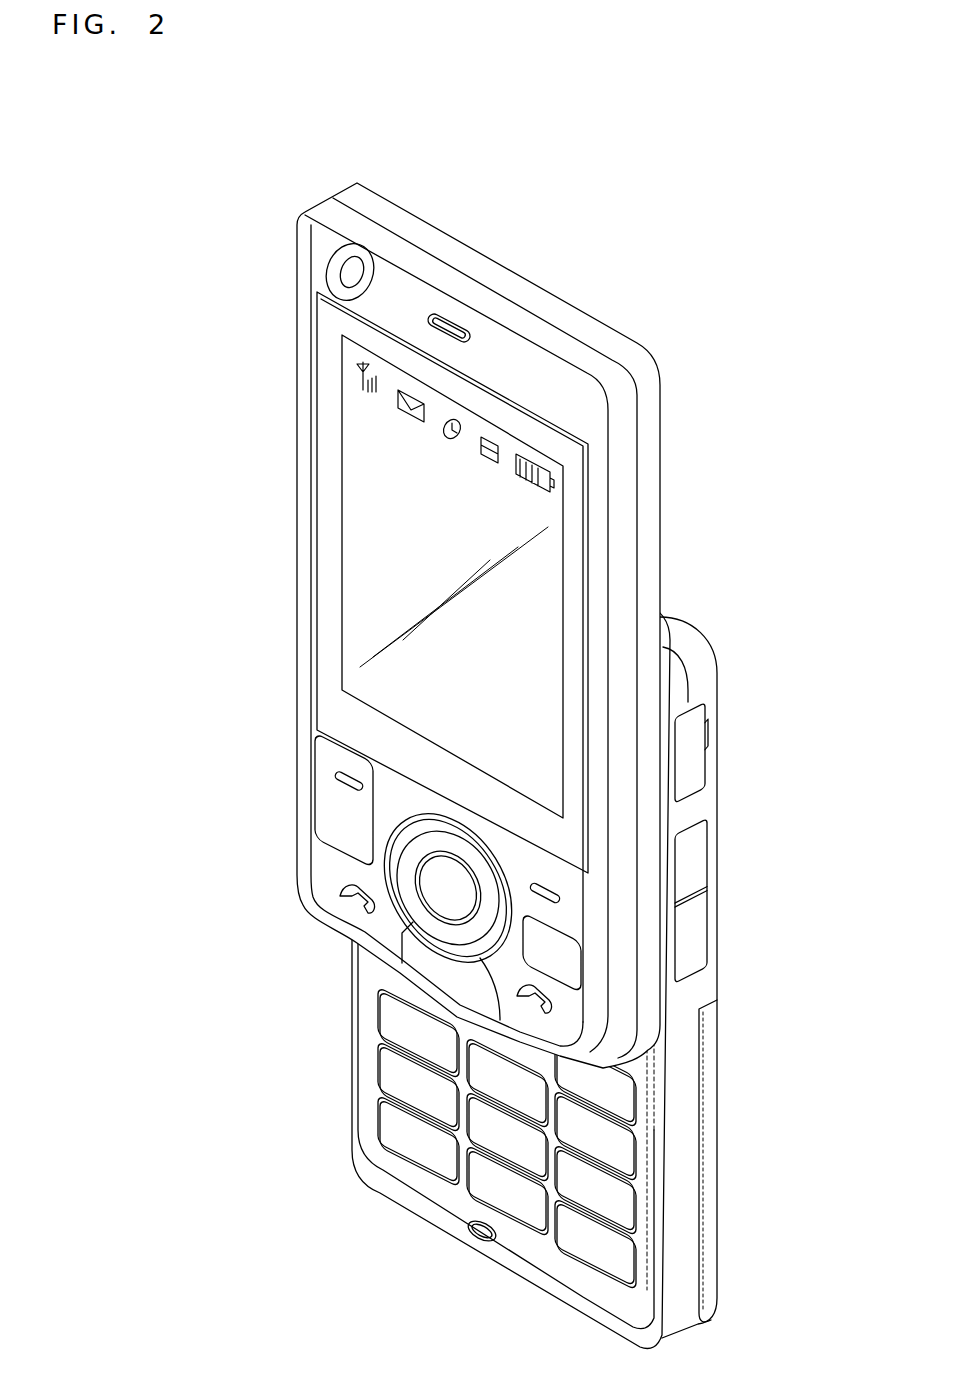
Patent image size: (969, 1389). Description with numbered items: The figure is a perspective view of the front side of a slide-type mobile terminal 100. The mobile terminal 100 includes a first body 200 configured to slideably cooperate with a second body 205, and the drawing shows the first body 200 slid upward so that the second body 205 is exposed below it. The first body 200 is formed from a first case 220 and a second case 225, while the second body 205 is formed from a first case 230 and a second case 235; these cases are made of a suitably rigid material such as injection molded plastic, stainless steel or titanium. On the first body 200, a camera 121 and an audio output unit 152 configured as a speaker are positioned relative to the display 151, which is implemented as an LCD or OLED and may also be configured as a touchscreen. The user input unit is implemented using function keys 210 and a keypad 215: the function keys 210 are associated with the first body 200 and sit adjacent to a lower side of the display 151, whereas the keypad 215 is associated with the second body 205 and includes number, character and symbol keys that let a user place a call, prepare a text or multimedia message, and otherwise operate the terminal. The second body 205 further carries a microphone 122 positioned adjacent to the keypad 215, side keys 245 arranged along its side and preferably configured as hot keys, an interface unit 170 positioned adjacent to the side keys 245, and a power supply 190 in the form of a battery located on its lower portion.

The mobile terminal 100 is at (700, 226).
The first body 200 is at (264, 382).
The second body 205 is at (347, 1043).
The camera 121 is at (352, 272).
The audio output unit 152 is at (451, 326).
The display 151 is at (360, 504).
The second case 225 is at (648, 440).
The first case 220 is at (623, 492).
The function keys 210 is at (332, 822).
The keypad 215 is at (388, 1113).
The first case 230 is at (673, 668).
The second case 235 is at (705, 699).
The interface unit 170 is at (694, 744).
The side keys 245 is at (699, 934).
The power supply 190 is at (706, 1134).
The microphone 122 is at (484, 1242).